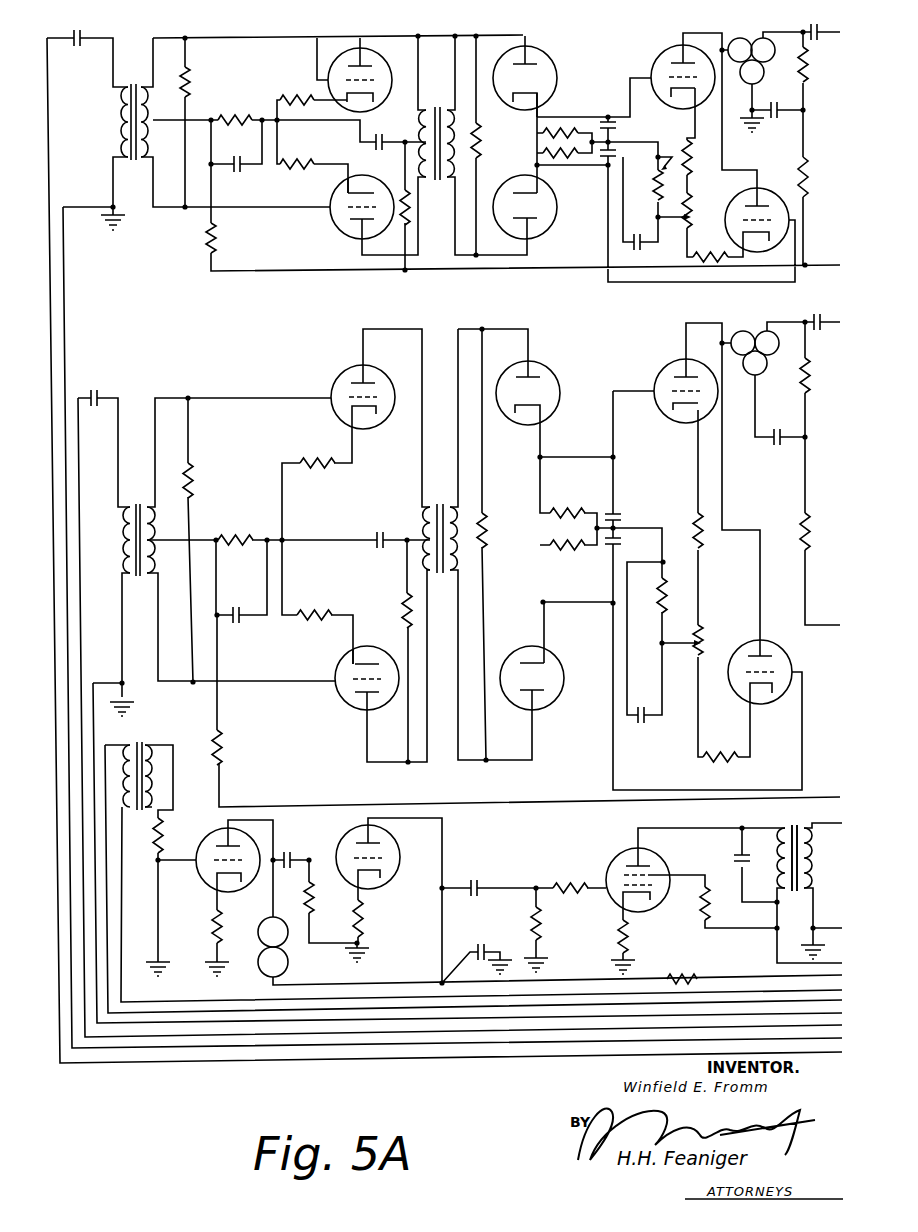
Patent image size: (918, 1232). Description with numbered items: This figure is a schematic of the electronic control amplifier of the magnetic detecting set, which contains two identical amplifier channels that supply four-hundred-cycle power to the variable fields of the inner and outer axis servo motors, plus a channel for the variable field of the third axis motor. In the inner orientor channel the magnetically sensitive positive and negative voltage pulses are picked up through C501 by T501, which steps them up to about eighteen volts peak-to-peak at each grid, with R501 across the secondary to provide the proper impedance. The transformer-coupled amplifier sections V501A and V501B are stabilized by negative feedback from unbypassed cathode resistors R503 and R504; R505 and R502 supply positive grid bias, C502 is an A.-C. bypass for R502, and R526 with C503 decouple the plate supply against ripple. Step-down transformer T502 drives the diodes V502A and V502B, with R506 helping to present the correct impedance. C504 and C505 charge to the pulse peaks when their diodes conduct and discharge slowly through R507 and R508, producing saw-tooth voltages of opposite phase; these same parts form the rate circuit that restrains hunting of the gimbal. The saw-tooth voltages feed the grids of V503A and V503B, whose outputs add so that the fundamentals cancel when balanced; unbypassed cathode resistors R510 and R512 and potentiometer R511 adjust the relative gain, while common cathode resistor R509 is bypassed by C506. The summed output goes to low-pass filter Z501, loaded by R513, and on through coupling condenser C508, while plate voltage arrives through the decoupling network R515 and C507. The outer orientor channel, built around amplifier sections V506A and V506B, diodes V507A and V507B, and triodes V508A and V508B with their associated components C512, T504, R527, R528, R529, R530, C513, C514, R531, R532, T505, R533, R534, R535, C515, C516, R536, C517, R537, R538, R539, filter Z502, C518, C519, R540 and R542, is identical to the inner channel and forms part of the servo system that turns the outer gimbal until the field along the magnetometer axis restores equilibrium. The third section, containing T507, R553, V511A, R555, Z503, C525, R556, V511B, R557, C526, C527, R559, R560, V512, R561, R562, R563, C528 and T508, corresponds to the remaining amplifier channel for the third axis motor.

The input capacitor C501 is at (69, 49).
The input transformer T501 is at (134, 113).
The secondary impedance resistor R501 is at (205, 82).
The grid bias resistor R502 is at (234, 110).
The unbypassed cathode resistor R503 is at (293, 92).
The unbypassed cathode resistor R504 is at (293, 157).
The grid bias resistor R505 is at (231, 238).
The A.-C. bypass capacitor C502 is at (229, 158).
The decoupling capacitor C503 is at (379, 135).
The amplifier triode section V501A is at (371, 75).
The amplifier triode section V501B is at (364, 199).
The step-down transformer T502 is at (437, 133).
The decoupling resistor R526 is at (423, 207).
The load resistor R506 is at (495, 140).
The diode V502A is at (538, 75).
The diode V502B is at (533, 214).
The cathode discharge resistor R507 is at (562, 128).
The cathode discharge resistor R508 is at (566, 162).
The cathode capacitor C504 is at (625, 125).
The cathode capacitor C505 is at (625, 150).
The cathode bypass capacitor C506 is at (631, 249).
The common cathode resistor R509 is at (644, 185).
The unbypassed cathode resistor R510 is at (705, 157).
The potentiometer R511 is at (705, 210).
The unbypassed cathode resistor R512 is at (710, 250).
The triode V503A is at (671, 71).
The triode V503B is at (762, 210).
The low-pass filter Z501 is at (750, 51).
The decoupling capacitor C507 is at (775, 102).
The coupling condenser C508 is at (812, 26).
The filter load resistor R513 is at (821, 64).
The decoupling resistor R515 is at (821, 180).
The capacitor C512 is at (94, 391).
The transformer T504 is at (119, 540).
The resistor R527 is at (209, 480).
The resistor R528 is at (237, 531).
The resistor R529 is at (316, 474).
The resistor R530 is at (313, 604).
The capacitor C513 is at (238, 606).
The capacitor C514 is at (385, 533).
The resistor R531 is at (239, 747).
The resistor R532 is at (390, 610).
The amplifier triode section V506A is at (373, 388).
The amplifier triode section V506B is at (367, 671).
The transformer T505 is at (441, 530).
The resistor R533 is at (503, 530).
The diode section V507A is at (539, 386).
The diode section V507B is at (544, 671).
The resistor R534 is at (567, 503).
The resistor R535 is at (567, 555).
The capacitor C515 is at (633, 516).
The capacitor C516 is at (629, 550).
The resistor R536 is at (647, 595).
The capacitor C517 is at (645, 728).
The resistor R537 is at (718, 533).
The resistor R538 is at (718, 639).
The resistor R539 is at (720, 747).
The triode section V508A is at (675, 385).
The triode section V508B is at (769, 666).
The network terminal Z502 is at (752, 342).
The capacitor C518 is at (773, 449).
The capacitor C519 is at (812, 315).
The resistor R540 is at (789, 375).
The resistor R542 is at (789, 530).
The transformer T507 is at (135, 769).
The resistor R553 is at (183, 833).
The vacuum tube section V511A is at (237, 856).
The resistor R555 is at (237, 920).
The network terminal Z503 is at (259, 956).
The capacitor C525 is at (300, 853).
The resistor R556 is at (328, 897).
The vacuum tube section V511B is at (381, 854).
The resistor R557 is at (378, 918).
The capacitor C526 is at (474, 880).
The capacitor C527 is at (481, 945).
The resistor R559 is at (568, 878).
The resistor R560 is at (555, 923).
The pentode tube V512 is at (644, 873).
The resistor R561 is at (644, 936).
The resistor R562 is at (684, 968).
The resistor R563 is at (687, 903).
The capacitor C528 is at (723, 861).
The output transformer T508 is at (793, 847).